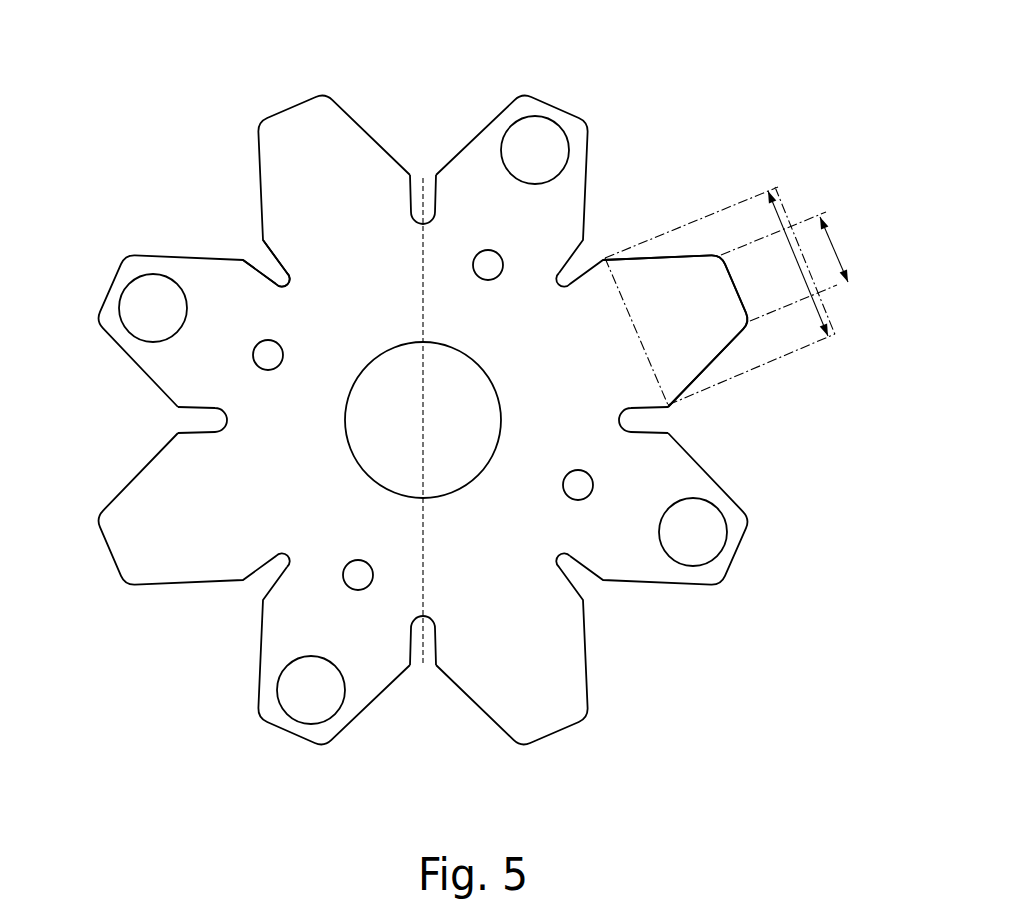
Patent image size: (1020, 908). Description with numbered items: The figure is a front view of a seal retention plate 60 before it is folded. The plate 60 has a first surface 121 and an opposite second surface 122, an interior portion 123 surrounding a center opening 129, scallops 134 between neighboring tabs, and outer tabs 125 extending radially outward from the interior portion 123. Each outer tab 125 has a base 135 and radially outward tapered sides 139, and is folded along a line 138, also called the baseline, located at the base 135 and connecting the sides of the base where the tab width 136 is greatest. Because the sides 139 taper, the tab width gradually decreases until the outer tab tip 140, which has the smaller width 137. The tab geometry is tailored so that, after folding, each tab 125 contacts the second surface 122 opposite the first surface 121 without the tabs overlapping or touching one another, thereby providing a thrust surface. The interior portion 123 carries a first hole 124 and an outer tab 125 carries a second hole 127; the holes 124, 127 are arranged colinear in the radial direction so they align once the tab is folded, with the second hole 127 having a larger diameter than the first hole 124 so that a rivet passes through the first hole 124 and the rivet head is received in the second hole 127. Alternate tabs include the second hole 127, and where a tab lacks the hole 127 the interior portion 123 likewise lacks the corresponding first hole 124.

The seal retention plate 60 is at (178, 90).
The first surface 121 is at (262, 402).
The second surface 122 is at (102, 498).
The interior portion 123 is at (297, 507).
The first hole 124 is at (255, 345).
The outer tabs 125 is at (480, 182).
The second hole 127 is at (147, 273).
The center opening 129 is at (482, 470).
The scallops 134 is at (276, 282).
The base 135 is at (623, 297).
The tab width 136 is at (795, 248).
The tip width 137 is at (835, 252).
The fold line 138 is at (650, 360).
The radially outward tapered sides 139 is at (695, 255).
The outer tab tip 140 is at (740, 280).